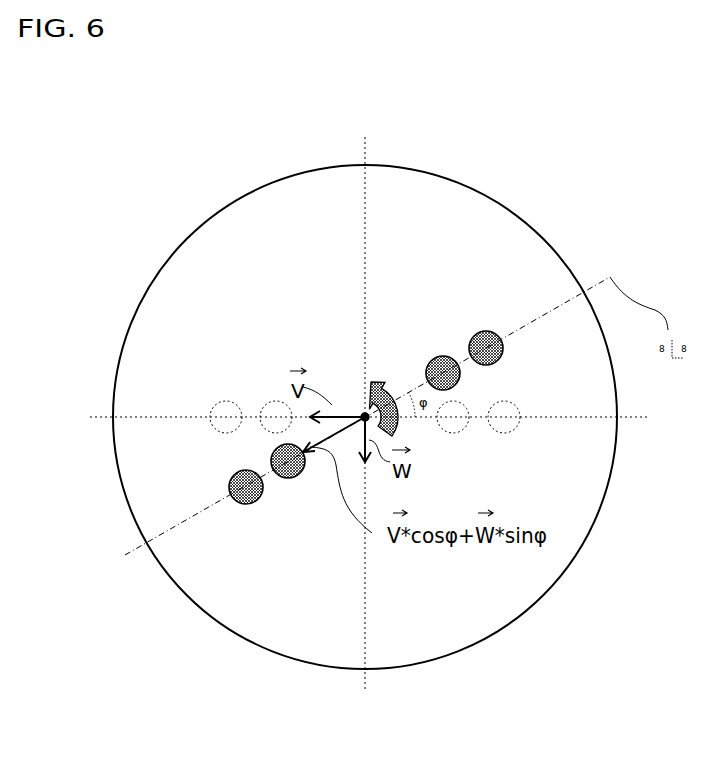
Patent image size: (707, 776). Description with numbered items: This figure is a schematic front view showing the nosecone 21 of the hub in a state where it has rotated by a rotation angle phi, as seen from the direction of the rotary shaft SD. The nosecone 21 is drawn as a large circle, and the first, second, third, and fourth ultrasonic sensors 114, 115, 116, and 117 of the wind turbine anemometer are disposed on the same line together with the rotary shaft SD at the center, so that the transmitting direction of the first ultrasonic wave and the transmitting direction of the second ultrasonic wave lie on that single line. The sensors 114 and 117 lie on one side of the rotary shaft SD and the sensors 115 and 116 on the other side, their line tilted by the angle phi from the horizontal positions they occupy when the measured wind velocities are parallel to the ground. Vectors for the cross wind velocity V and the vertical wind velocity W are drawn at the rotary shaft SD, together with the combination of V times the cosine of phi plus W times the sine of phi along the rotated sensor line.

The nosecone 21 is at (485, 617).
The first ultrasonic sensor 114 is at (246, 503).
The second ultrasonic sensor 115 is at (442, 357).
The third ultrasonic sensor 116 is at (486, 331).
The fourth ultrasonic sensor 117 is at (290, 478).
The rotary shaft direction SD is at (362, 415).